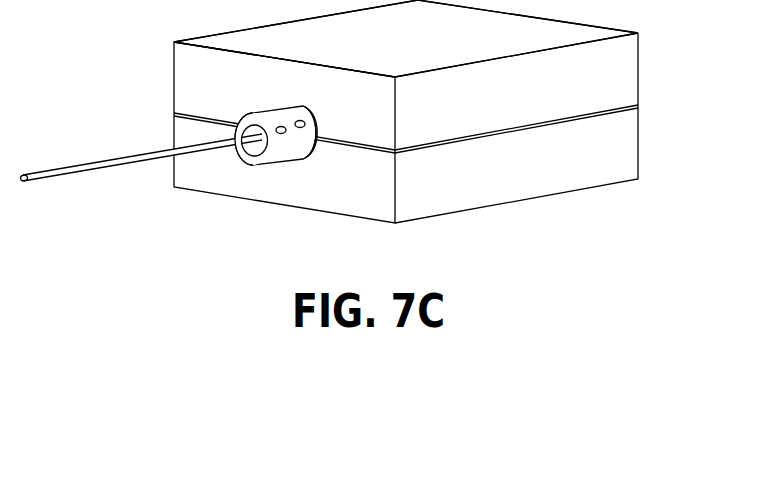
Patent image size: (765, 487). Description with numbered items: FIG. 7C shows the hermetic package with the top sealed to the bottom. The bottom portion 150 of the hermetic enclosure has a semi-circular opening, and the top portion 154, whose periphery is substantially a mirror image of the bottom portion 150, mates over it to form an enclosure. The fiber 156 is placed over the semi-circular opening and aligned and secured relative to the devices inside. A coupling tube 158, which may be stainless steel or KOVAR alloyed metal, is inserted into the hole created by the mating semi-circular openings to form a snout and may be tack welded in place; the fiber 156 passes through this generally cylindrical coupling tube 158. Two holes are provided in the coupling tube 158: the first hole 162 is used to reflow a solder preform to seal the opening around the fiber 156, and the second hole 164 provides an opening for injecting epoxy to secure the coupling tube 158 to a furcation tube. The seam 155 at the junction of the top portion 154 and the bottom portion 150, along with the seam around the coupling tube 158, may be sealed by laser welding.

The bottom portion 150 is at (503, 195).
The top portion 154 is at (625, 60).
The seam 155 is at (637, 111).
The fiber 156 is at (69, 168).
The coupling tube 158 is at (270, 166).
The first hole 162 is at (300, 120).
The second hole 164 is at (281, 126).